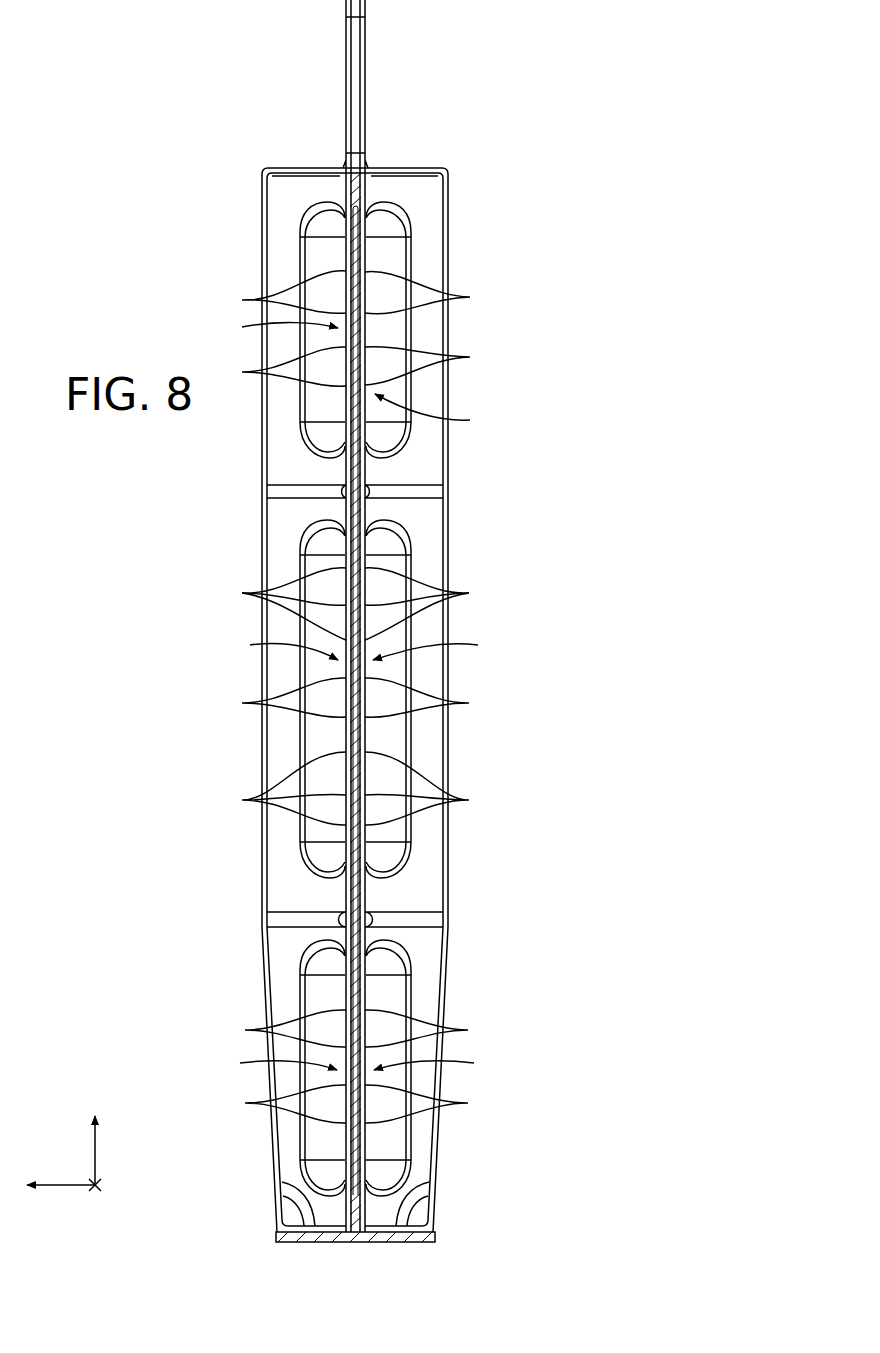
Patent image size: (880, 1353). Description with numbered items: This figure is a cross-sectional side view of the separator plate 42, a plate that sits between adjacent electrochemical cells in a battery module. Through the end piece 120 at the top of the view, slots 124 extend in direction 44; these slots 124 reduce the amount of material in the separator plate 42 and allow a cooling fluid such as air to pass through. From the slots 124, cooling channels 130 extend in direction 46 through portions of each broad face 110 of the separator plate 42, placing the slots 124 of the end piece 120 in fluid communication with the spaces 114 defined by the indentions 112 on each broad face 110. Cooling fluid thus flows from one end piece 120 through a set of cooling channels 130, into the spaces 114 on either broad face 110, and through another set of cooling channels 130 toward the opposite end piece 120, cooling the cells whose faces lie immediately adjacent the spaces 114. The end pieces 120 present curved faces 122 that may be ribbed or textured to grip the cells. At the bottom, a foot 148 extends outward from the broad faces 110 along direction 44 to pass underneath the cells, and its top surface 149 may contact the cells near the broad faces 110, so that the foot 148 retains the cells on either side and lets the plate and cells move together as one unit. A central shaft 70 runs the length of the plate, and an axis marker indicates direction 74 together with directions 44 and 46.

The separator plate 42 is at (262, 58).
The shaft 70 is at (360, 38).
The broad face 110 is at (366, 228).
The indentions 112 is at (366, 250).
The spaces 114 is at (368, 294).
The end piece 120 is at (464, 180).
The curved faces 122 is at (405, 186).
The slots 124 is at (354, 697).
The cooling channels 130 is at (355, 697).
The foot 148 is at (353, 1244).
The top surface 149 is at (462, 1181).
The vertical axis 74 is at (96, 1160).
The direction 44 is at (62, 1184).
The direction 46 is at (97, 1192).